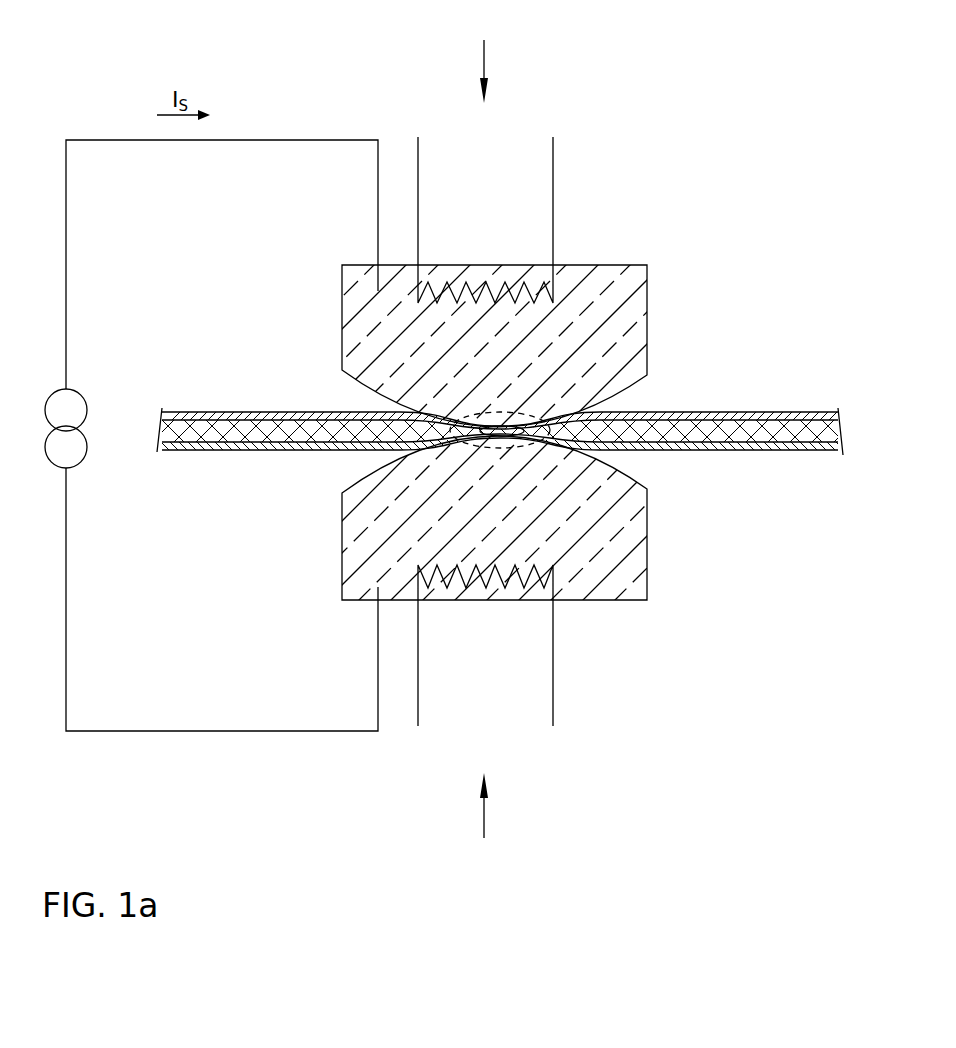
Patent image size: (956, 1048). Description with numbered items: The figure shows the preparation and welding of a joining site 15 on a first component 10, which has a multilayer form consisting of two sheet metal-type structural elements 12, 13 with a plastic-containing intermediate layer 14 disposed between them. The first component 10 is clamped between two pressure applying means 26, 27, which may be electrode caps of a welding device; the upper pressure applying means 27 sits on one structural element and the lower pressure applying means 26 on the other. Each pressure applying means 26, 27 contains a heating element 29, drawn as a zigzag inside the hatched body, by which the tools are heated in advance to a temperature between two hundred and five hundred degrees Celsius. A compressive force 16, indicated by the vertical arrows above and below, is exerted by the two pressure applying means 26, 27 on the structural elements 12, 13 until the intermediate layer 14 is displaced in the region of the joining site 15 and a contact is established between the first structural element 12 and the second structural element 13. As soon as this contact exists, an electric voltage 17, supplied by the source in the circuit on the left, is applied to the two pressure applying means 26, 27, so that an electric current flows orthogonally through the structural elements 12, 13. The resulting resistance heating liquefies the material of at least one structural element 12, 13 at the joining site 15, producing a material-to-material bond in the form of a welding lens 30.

The first component 10 is at (515, 391).
The first structural element 12 is at (741, 447).
The second structural element 13 is at (733, 418).
The intermediate layer 14 is at (783, 432).
The joining site 15 is at (518, 416).
The compressive force 16 is at (484, 60).
The electric voltage 17 is at (79, 460).
The pressure applying means 26 is at (633, 587).
The pressure applying means 27 is at (613, 273).
The heating element 29 is at (552, 155).
The welding lens 30 is at (502, 432).